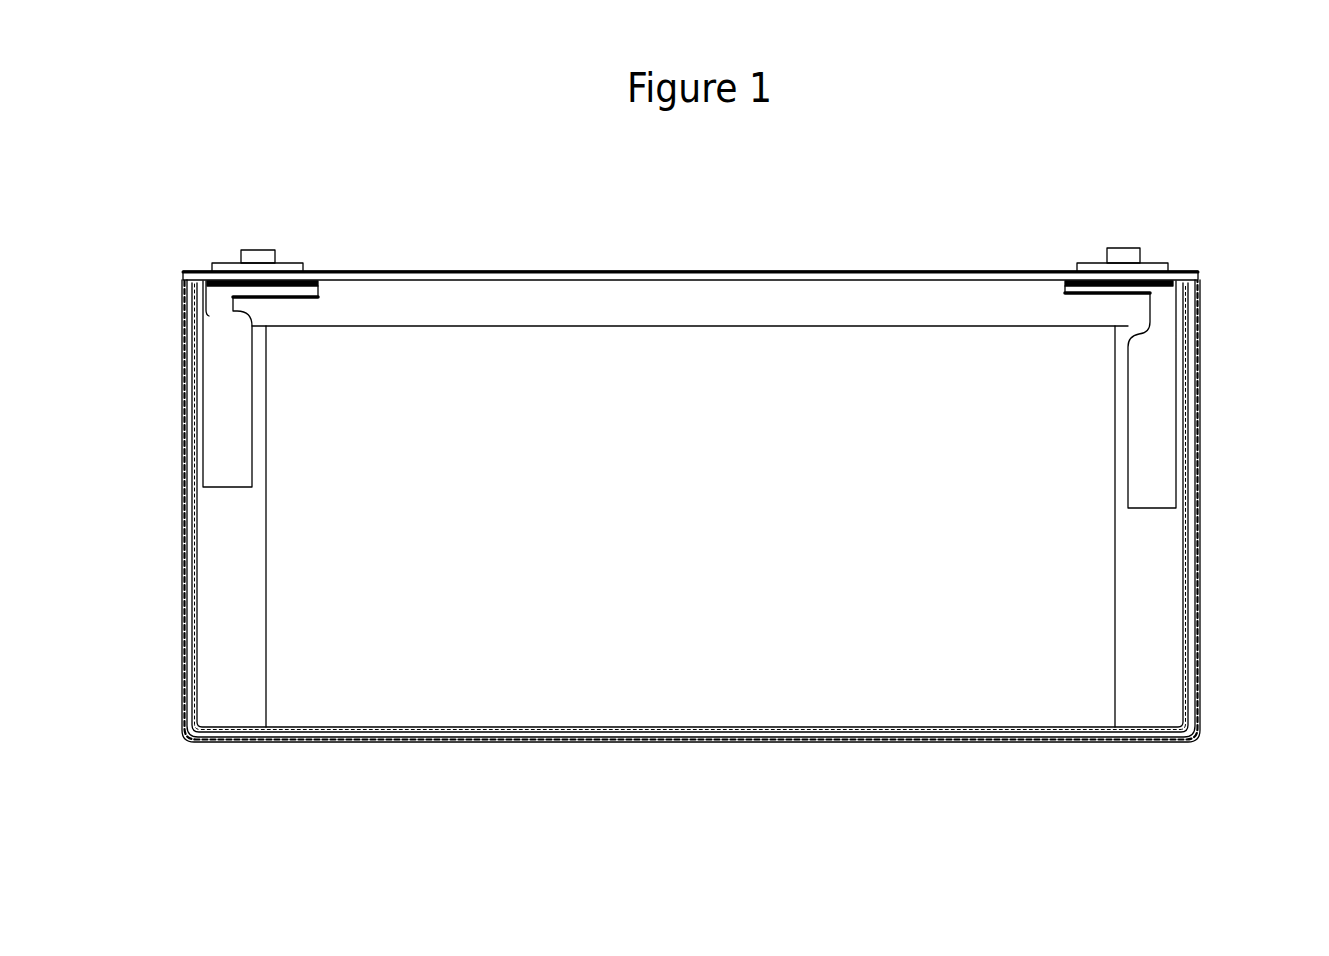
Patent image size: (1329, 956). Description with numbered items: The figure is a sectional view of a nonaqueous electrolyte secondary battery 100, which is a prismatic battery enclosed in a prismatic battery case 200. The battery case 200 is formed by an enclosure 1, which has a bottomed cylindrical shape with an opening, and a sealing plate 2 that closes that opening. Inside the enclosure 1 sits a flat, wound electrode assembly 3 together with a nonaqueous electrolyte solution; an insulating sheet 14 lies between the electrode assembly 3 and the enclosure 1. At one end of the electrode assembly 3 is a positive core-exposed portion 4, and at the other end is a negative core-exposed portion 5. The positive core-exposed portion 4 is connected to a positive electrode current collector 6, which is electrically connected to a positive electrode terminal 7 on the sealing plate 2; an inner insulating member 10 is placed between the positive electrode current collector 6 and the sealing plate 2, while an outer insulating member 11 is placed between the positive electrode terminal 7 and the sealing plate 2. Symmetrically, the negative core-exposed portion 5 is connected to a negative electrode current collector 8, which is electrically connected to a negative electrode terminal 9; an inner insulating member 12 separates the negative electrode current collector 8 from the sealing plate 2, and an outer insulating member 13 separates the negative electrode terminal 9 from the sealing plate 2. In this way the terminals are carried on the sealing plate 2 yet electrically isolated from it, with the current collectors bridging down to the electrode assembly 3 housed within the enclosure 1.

The nonaqueous electrolyte secondary battery 100 is at (193, 148).
The battery case 200 is at (1204, 541).
The enclosure 1 is at (1198, 596).
The sealing plate 2 is at (512, 272).
The electrode assembly 3 is at (704, 710).
The positive core-exposed portion 4 is at (1153, 710).
The negative core-exposed portion 5 is at (219, 710).
The positive electrode current collector 6 is at (1158, 386).
The positive electrode terminal 7 is at (1125, 248).
The negative electrode current collector 8 is at (226, 418).
The negative electrode terminal 9 is at (256, 250).
The inner insulating member 10 is at (1142, 281).
The outer insulating member 11 is at (1082, 264).
The inner insulating member 12 is at (316, 282).
The outer insulating member 13 is at (298, 264).
The insulating sheet 14 is at (190, 659).